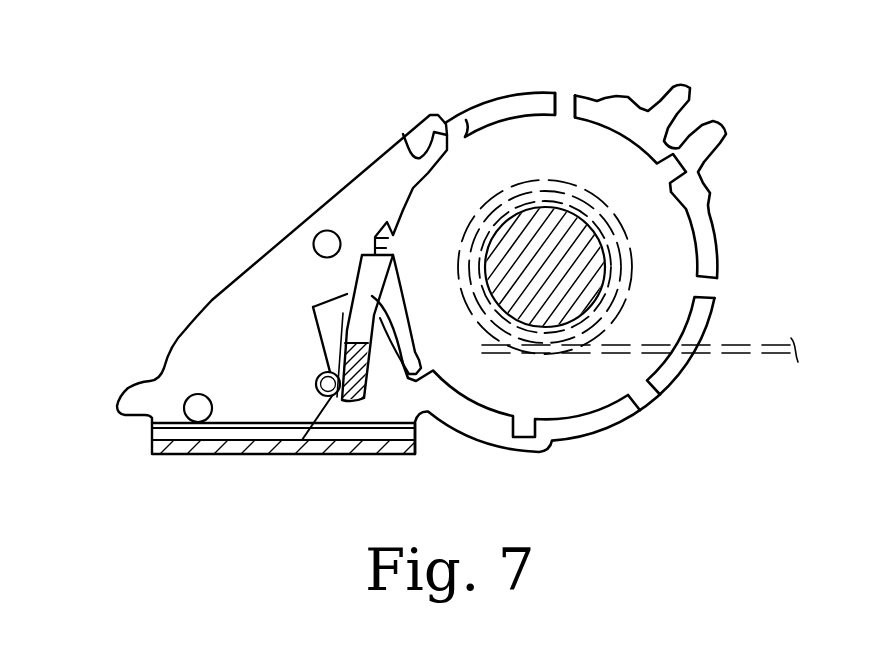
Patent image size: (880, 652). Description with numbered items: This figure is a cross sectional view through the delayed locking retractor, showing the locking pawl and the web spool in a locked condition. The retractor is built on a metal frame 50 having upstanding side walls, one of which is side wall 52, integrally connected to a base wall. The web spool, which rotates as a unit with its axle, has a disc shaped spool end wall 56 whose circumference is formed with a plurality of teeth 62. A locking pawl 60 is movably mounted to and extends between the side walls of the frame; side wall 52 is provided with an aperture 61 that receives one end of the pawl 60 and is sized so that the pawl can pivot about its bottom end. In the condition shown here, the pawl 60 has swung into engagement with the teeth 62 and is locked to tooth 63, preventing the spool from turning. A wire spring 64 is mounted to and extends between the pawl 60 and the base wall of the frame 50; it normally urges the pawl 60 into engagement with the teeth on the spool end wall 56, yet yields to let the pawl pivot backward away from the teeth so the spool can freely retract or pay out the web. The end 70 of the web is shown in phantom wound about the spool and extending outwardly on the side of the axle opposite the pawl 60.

The metal frame 50 is at (180, 454).
The side wall 52 is at (250, 268).
The spool end wall 56 is at (582, 132).
The locking pawl 60 is at (362, 264).
The aperture 61 is at (415, 362).
The plurality of teeth 62 is at (550, 101).
The tooth 63 is at (373, 240).
The wire spring 64 is at (313, 395).
The end of the web 70 is at (750, 345).